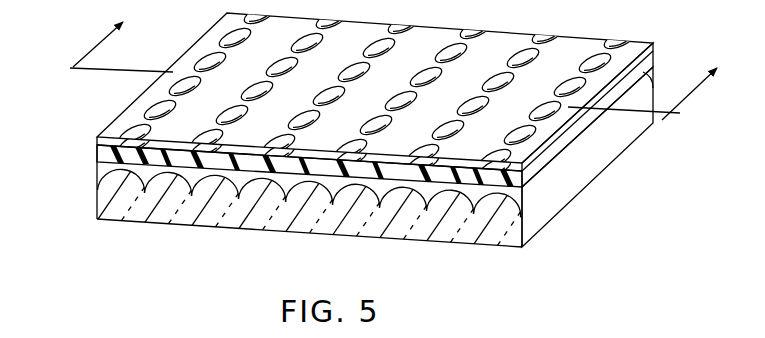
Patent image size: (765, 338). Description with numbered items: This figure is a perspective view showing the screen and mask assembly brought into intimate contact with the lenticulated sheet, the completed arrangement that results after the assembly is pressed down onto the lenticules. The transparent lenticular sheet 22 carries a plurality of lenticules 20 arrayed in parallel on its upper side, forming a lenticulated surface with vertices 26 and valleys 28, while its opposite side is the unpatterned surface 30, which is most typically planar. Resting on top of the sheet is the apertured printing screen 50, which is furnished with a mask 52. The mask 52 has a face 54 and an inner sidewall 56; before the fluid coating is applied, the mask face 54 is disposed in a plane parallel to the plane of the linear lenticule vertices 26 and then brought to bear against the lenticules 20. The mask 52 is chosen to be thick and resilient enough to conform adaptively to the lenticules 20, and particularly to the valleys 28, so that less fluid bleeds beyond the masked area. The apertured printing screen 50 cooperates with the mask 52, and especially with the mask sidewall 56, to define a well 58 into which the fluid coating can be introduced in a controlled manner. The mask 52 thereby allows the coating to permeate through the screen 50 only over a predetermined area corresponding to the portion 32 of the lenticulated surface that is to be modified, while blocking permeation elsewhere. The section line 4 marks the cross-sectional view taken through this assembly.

The apertured printing screen 50 is at (200, 50).
The mask 52 is at (100, 150).
The face 54 is at (110, 180).
The inner sidewall 56 is at (168, 157).
The well 58 is at (343, 160).
The portion 32 is at (422, 160).
The lenticules 20 is at (212, 177).
The vertices 26 is at (277, 178).
The valleys 28 is at (312, 182).
The unpatterned surface 30 is at (455, 250).
The transparent lenticular sheet 22 is at (604, 192).
The section line 4- 4 is at (381, 86).